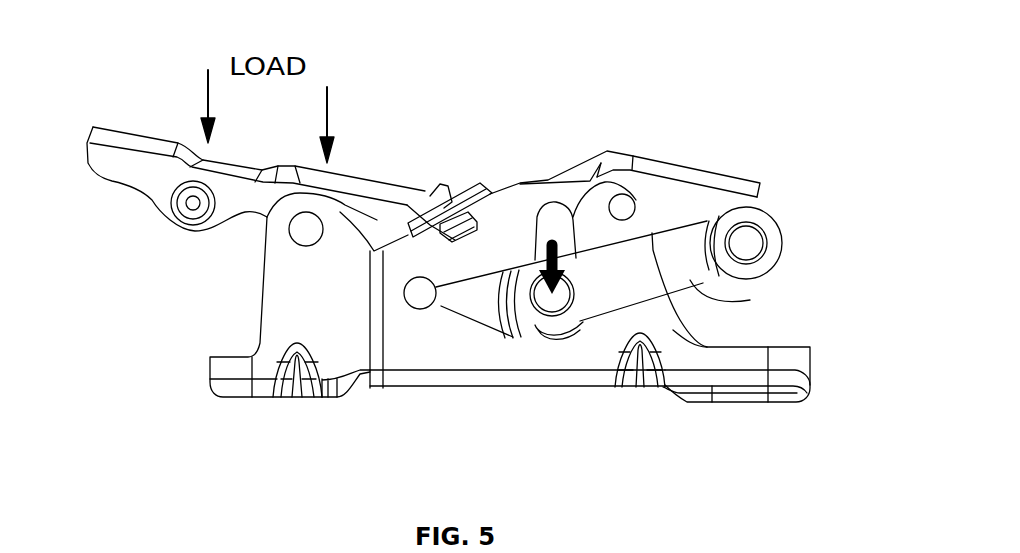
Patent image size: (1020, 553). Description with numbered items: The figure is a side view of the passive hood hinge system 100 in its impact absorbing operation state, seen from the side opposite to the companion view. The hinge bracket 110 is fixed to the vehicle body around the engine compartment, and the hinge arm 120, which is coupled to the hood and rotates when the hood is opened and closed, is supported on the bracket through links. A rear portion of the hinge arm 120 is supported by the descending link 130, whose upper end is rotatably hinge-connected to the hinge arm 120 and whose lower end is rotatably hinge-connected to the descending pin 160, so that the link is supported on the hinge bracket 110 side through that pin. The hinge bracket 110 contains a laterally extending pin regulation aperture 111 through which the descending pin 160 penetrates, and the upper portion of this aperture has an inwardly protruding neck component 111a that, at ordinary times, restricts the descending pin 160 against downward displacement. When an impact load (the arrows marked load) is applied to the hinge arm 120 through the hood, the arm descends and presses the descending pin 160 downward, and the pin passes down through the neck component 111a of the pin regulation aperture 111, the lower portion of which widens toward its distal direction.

The passive hood hinge system 100 is at (727, 160).
The hinge bracket 110 is at (248, 300).
The pin regulation aperture 111 is at (540, 213).
The neck component 111a is at (590, 177).
The hinge arm 120 is at (127, 167).
The descending link 130 is at (693, 283).
The descending pin 160 is at (550, 300).